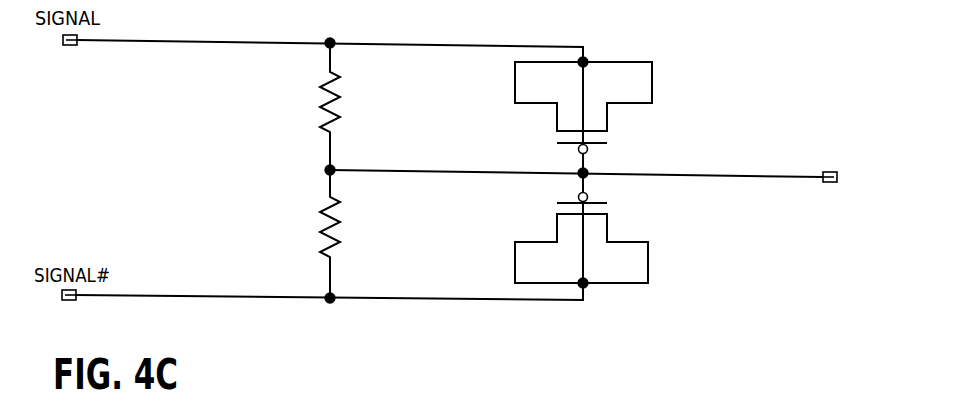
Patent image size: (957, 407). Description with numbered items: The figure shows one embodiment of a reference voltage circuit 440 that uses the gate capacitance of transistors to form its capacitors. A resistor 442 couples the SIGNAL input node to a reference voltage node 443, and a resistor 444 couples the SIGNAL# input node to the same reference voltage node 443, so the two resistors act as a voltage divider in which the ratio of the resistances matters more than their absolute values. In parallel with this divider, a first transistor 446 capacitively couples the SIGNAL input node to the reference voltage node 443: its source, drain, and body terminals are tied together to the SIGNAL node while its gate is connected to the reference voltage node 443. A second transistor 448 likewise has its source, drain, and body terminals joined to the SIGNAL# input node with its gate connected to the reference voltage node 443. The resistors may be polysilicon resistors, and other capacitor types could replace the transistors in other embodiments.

The reference voltage circuit 440 is at (443, 329).
The resistor 442 is at (345, 99).
The resistor 444 is at (345, 225).
The first transistor 446 is at (652, 78).
The second transistor 448 is at (650, 258).
The reference voltage node 443 is at (828, 188).